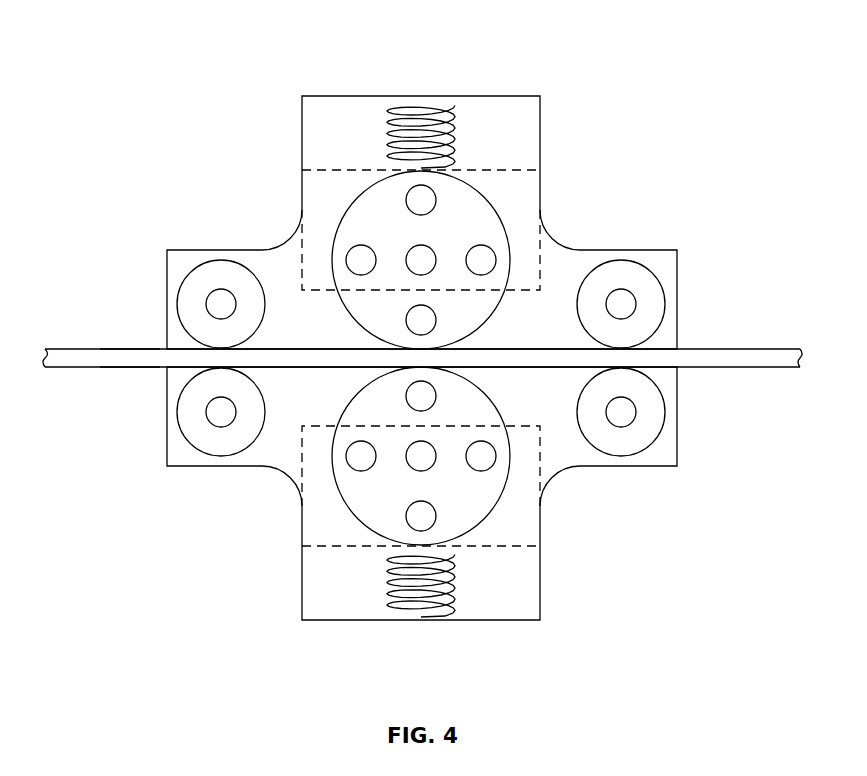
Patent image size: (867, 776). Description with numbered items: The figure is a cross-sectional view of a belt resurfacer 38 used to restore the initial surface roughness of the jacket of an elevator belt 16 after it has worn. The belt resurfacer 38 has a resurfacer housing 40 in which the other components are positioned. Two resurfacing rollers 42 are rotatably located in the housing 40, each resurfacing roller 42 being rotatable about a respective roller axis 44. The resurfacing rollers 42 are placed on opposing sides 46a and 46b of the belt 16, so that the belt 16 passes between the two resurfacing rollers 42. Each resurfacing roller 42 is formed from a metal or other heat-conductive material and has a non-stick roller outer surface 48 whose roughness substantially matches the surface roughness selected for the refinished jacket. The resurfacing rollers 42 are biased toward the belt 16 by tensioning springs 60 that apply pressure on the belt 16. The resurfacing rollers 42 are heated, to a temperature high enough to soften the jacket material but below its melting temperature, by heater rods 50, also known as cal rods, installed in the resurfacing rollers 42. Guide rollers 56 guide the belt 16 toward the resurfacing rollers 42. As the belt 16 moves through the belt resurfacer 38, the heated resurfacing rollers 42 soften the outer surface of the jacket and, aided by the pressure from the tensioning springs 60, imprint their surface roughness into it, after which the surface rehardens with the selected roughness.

The belt resurfacer 38 is at (110, 50).
The resurfacer housing 40 is at (350, 96).
The resurfacing roller 42 is at (358, 212).
The roller axis 44 is at (432, 248).
The roller outer surface 48 is at (330, 240).
The heater rod 50 is at (483, 253).
The guide roller 56 is at (212, 270).
The tensioning spring 60 is at (428, 103).
The belt 16 is at (53, 360).
The first side of the belt 46a is at (125, 349).
The second side of the belt 46b is at (125, 368).